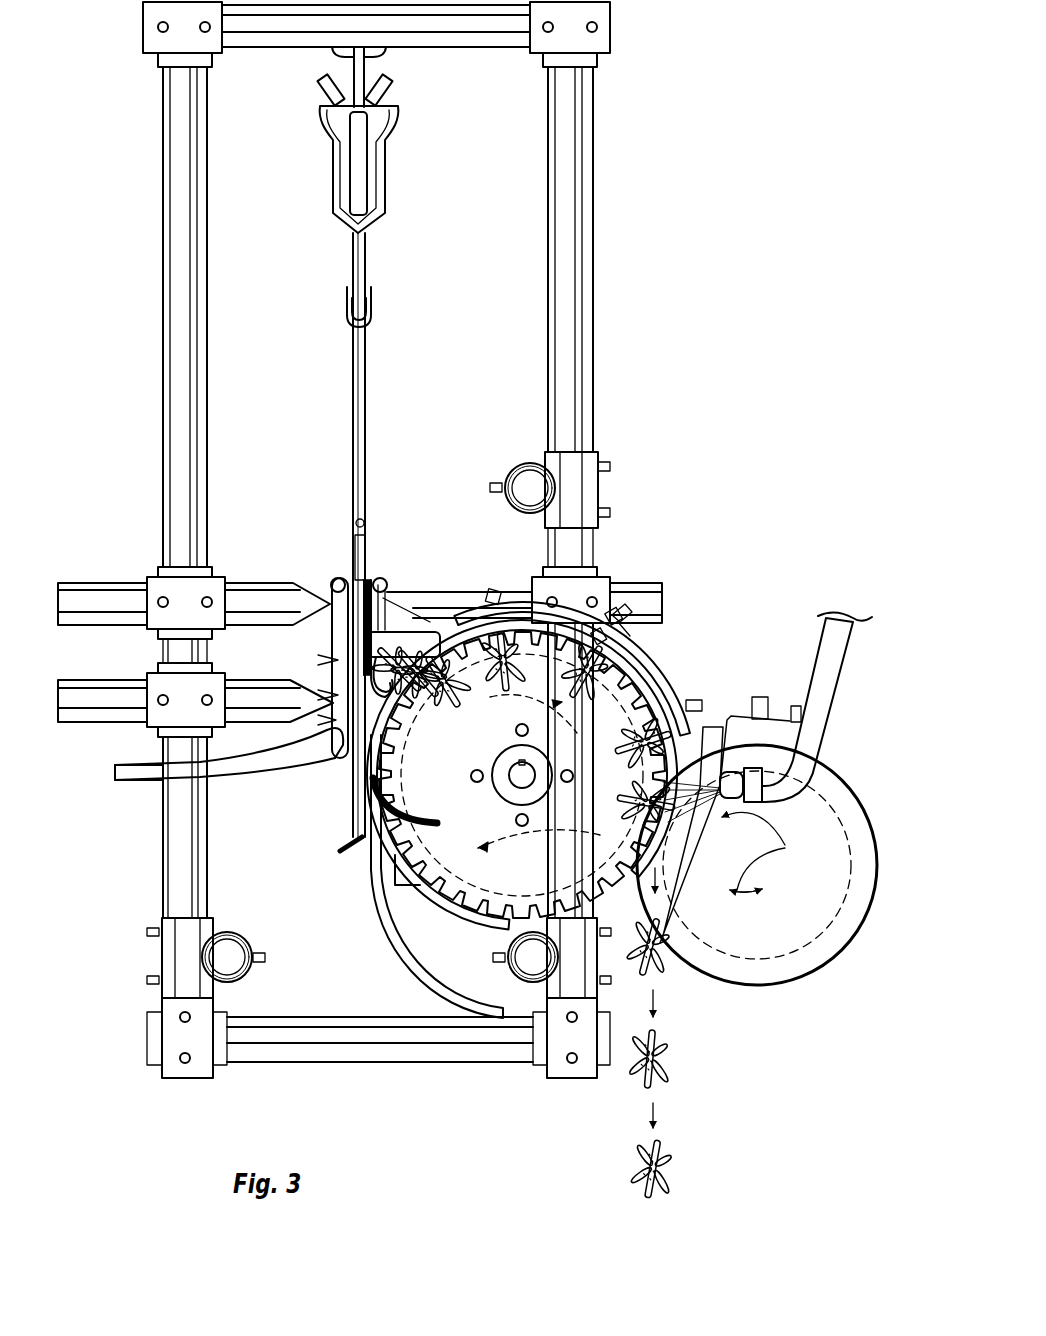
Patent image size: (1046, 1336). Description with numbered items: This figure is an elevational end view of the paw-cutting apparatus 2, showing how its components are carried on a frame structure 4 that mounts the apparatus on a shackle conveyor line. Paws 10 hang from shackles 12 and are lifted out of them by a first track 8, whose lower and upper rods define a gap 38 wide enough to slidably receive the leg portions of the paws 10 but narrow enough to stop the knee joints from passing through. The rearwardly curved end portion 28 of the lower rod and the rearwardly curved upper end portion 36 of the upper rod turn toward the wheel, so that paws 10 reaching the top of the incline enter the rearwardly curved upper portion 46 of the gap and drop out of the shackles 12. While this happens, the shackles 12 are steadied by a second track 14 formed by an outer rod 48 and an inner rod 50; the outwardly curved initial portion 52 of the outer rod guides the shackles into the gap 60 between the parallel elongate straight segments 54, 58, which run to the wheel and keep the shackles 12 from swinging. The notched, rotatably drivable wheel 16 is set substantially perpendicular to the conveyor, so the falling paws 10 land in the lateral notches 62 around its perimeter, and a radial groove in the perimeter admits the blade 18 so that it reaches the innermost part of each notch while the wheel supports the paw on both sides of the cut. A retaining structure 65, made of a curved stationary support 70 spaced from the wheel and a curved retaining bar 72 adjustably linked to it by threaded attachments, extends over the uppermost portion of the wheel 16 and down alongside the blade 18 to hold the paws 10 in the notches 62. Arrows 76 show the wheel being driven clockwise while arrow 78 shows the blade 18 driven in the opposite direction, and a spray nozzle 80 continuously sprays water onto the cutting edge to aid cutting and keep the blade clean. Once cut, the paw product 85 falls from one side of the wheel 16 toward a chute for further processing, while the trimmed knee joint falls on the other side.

The paw-cutting apparatus 2 is at (612, 103).
The frame structure 4 is at (180, 254).
The first track 8 is at (392, 592).
The paws 10 is at (622, 657).
The shackles 12 is at (357, 472).
The second track 14 is at (291, 705).
The elongate straight segment 54 is at (337, 760).
The notched, rotatably drivable wheel 16 is at (392, 953).
The blade 18 is at (663, 877).
The end portion of lower rod 28 is at (370, 679).
The upper end portion of upper rod 36 is at (440, 594).
The gap 38 is at (298, 554).
The rearwardly curved upper portion of gap 46 is at (334, 596).
The outer rod 48 is at (330, 605).
The inner rod 50 is at (416, 532).
The elongate straight segment 58 is at (381, 578).
The outwardly curved initial portion 52 is at (140, 778).
The gap 60 is at (345, 725).
The lateral notches 62 is at (393, 888).
The retaining structure 65 is at (622, 612).
The curved stationary support 70 is at (663, 672).
The curved retaining bar 72 is at (660, 697).
The arrows 76 is at (540, 775).
The arrow 78 is at (769, 852).
The spray nozzle 80 is at (735, 778).
The cut paw product 85 is at (668, 1168).